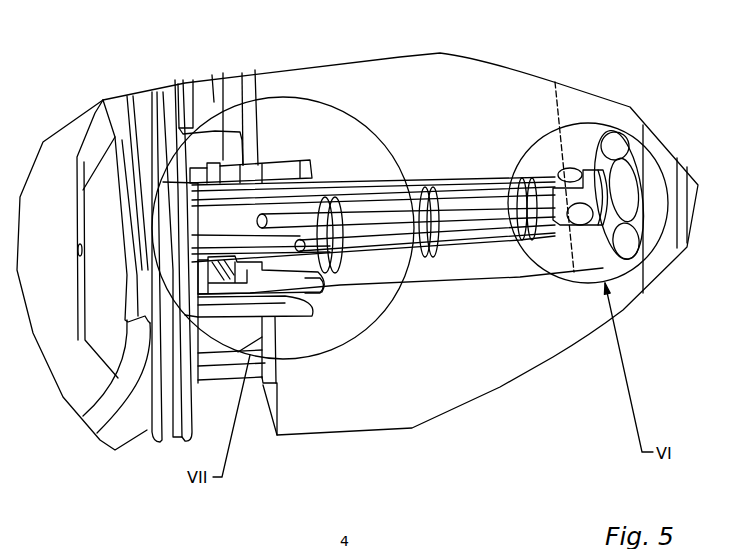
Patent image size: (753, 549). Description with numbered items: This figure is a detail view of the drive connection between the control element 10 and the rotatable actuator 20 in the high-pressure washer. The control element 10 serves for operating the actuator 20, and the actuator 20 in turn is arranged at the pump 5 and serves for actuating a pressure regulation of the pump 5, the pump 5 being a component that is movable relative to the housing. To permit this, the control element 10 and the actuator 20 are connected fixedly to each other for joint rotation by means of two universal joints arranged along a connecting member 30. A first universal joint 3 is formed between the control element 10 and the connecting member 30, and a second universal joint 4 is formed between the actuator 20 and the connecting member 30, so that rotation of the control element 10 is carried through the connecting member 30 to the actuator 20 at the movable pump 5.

The control element 10 is at (203, 250).
The first universal joint 3 is at (237, 237).
The connecting member 30 is at (433, 186).
The second universal joint 4 is at (571, 164).
The actuator 20 is at (597, 183).
The pump 5 is at (663, 252).